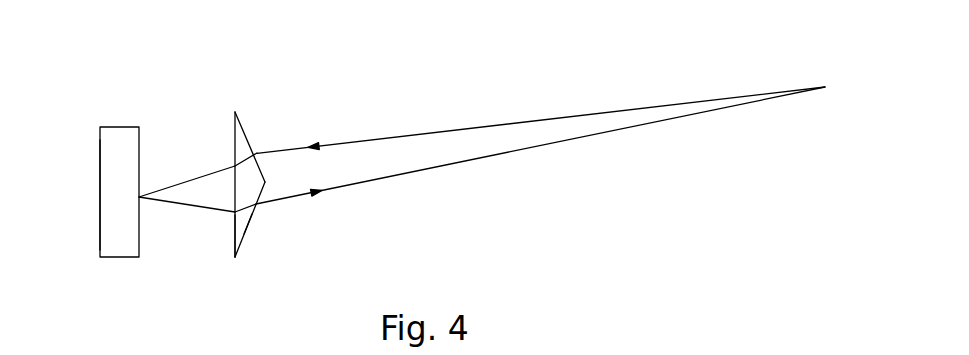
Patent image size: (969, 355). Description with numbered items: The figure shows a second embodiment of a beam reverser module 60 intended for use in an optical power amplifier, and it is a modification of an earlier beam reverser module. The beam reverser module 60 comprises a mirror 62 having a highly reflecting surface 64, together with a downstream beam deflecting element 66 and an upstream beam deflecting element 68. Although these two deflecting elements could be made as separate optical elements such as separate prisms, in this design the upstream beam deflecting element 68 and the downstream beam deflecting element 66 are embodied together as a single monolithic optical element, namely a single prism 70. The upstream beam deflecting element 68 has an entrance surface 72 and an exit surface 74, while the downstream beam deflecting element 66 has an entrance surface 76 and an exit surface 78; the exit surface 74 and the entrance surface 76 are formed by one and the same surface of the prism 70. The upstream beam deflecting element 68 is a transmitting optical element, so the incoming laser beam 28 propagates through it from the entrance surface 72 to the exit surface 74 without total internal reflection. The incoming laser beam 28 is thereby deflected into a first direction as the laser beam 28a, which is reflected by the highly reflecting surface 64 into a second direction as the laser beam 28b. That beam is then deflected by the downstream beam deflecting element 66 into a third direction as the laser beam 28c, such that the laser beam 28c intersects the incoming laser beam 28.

The incoming laser beam 28 is at (445, 131).
The laser beam 28a is at (190, 180).
The laser beam 28b is at (200, 207).
The laser beam 28c is at (387, 177).
The beam reverser module 60 is at (280, 167).
The mirror 62 is at (112, 182).
The highly reflecting surface 64 is at (152, 139).
The downstream beam deflecting element 66 is at (250, 240).
The upstream beam deflecting element 68 is at (252, 117).
The prism 70 is at (250, 202).
The entrance surface 72 is at (250, 142).
The exit surface 74 is at (235, 149).
The entrance surface 76 is at (227, 224).
The exit surface 78 is at (255, 217).